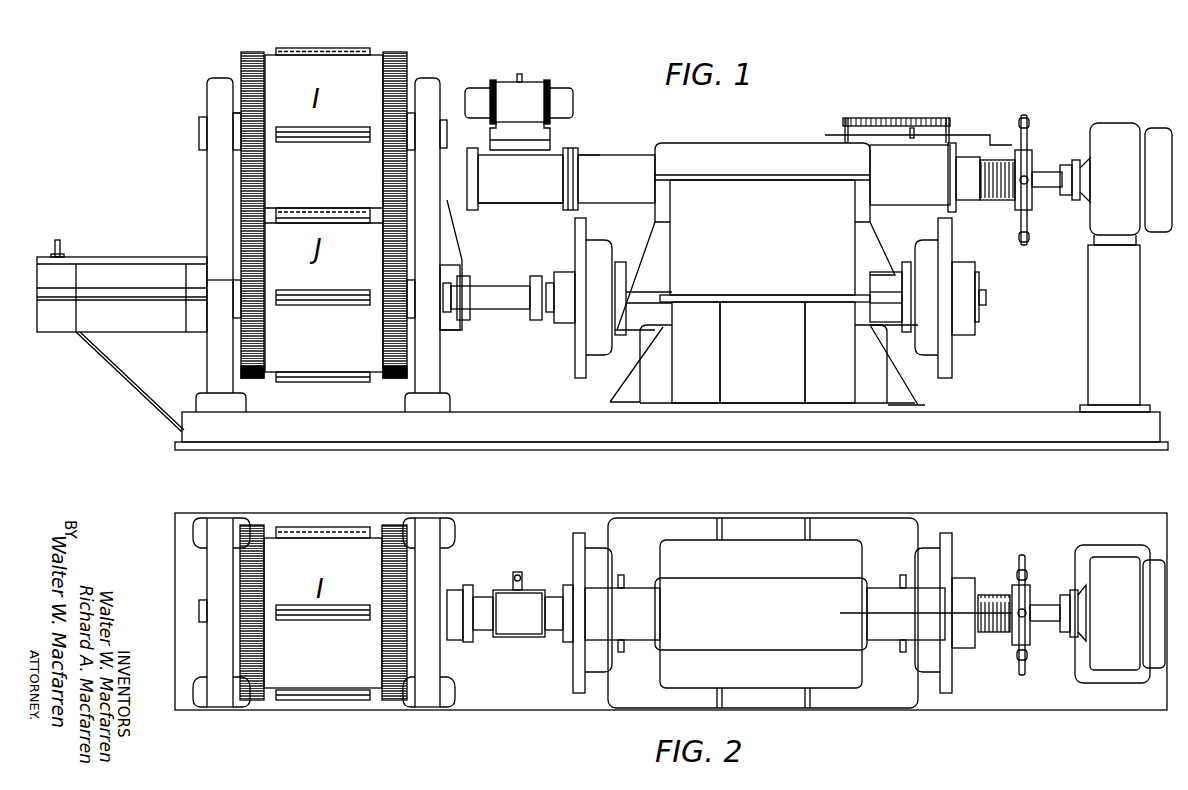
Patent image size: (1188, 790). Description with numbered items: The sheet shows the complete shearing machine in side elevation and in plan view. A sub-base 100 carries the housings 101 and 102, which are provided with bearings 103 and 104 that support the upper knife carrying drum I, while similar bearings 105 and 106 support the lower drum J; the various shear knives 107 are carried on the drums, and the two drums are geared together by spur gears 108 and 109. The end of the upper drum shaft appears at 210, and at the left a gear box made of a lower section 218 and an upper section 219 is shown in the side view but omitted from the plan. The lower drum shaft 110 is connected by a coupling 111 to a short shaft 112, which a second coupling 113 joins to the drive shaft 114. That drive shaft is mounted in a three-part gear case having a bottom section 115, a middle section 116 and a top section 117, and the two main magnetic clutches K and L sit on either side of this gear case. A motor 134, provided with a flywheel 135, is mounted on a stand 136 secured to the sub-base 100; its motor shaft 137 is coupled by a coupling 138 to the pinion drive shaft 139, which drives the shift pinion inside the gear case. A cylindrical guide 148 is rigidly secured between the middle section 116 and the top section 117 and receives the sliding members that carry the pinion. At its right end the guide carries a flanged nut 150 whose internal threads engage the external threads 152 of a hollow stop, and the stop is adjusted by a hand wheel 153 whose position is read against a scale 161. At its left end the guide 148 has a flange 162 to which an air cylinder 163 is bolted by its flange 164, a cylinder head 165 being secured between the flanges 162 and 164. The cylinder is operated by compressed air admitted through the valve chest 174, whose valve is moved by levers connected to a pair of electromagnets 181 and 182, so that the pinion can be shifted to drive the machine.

In FIG. 1, the sub-base 100 is at (671, 431).
In FIG. 1, the housing 101 is at (220, 167).
In FIG. 2, the housing 101 is at (220, 530).
In FIG. 1, the housing 102 is at (437, 376).
In FIG. 2, the housing 102 is at (430, 545).
In FIG. 1, the bearing 103 is at (237, 135).
In FIG. 1, the bearing 104 is at (412, 140).
In FIG. 1, the bearing 105 is at (236, 302).
In FIG. 1, the bearing 106 is at (447, 312).
In FIG. 1, the shear knives 107 is at (335, 44).
In FIG. 2, the shear knives 107 is at (330, 614).
In FIG. 1, the spur gear 108 is at (258, 44).
In FIG. 2, the spur gear 108 is at (340, 532).
In FIG. 1, the spur gear 109 is at (250, 375).
In FIG. 1, the lower drum shaft 110 is at (447, 283).
In FIG. 1, the coupling 111 is at (468, 290).
In FIG. 1, the short shaft 112 is at (500, 292).
In FIG. 1, the second coupling 113 is at (536, 283).
In FIG. 1, the drive shaft 114 is at (550, 282).
In FIG. 1, the bottom section 115 is at (777, 352).
In FIG. 2, the bottom section 115 is at (768, 528).
In FIG. 1, the middle section 116 is at (762, 241).
In FIG. 2, the middle section 116 is at (761, 614).
In FIG. 1, the top section 117 is at (762, 161).
In FIG. 2, the top section 117 is at (761, 614).
In FIG. 1, the motor 134 is at (1115, 179).
In FIG. 2, the motor 134 is at (1112, 614).
In FIG. 1, the flywheel 135 is at (1160, 135).
In FIG. 2, the flywheel 135 is at (1152, 565).
In FIG. 1, the stand 136 is at (1115, 323).
In FIG. 1, the motor shaft 137 is at (1078, 160).
In FIG. 1, the coupling 138 is at (1068, 165).
In FIG. 1, the pinion drive shaft 139 is at (1048, 172).
In FIG. 2, the pinion drive shaft 139 is at (1042, 608).
In FIG. 1, the cylindrical guide 148 is at (616, 179).
In FIG. 1, the flanged nut 150 is at (956, 165).
In FIG. 1, the external threads 152 is at (998, 204).
In FIG. 2, the external threads 152 is at (990, 598).
In FIG. 1, the hand wheel 153 is at (1027, 135).
In FIG. 2, the hand wheel 153 is at (1022, 568).
In FIG. 1, the scale 161 is at (932, 118).
In FIG. 1, the flange 162 is at (580, 152).
In FIG. 1, the air cylinder 163 is at (515, 179).
In FIG. 1, the flange 164 is at (565, 206).
In FIG. 1, the cylinder head 165 is at (578, 140).
In FIG. 1, the valve chest 174 is at (520, 112).
In FIG. 2, the valve chest 174 is at (519, 604).
In FIG. 1, the electromagnet 181 is at (478, 96).
In FIG. 2, the electromagnet 181 is at (476, 605).
In FIG. 1, the electromagnet 182 is at (560, 96).
In FIG. 2, the electromagnet 182 is at (553, 605).
In FIG. 1, the end of the upper drum shaft 210 is at (199, 132).
In FIG. 1, the lower section 218 is at (122, 312).
In FIG. 1, the upper section 219 is at (122, 286).
In FIG. 1, the main magnetic clutch K is at (600, 270).
In FIG. 2, the main magnetic clutch K is at (594, 568).
In FIG. 1, the main magnetic clutch L is at (928, 282).
In FIG. 2, the main magnetic clutch L is at (932, 580).